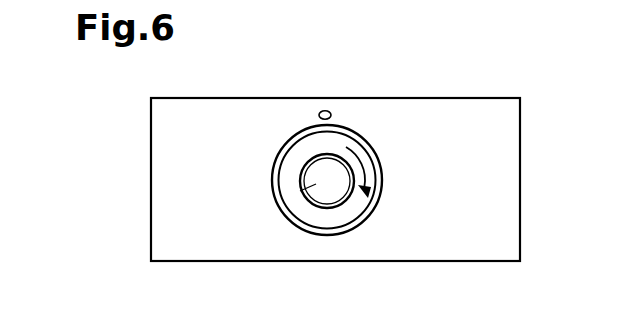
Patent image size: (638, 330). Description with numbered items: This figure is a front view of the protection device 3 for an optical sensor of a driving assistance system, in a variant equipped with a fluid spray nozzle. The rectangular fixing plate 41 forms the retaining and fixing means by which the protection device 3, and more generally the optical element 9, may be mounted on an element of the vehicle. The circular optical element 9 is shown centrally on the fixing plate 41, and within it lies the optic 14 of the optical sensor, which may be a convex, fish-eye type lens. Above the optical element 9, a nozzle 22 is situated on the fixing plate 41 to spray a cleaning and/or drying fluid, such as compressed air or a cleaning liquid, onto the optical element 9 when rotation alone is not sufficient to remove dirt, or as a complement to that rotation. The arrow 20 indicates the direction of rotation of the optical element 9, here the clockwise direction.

The protection device 3 is at (122, 224).
The optical element 9 is at (290, 166).
The optic 14 is at (299, 194).
The arrow 20 is at (366, 166).
The nozzle 22 is at (327, 111).
The fixing plate 41 is at (170, 178).